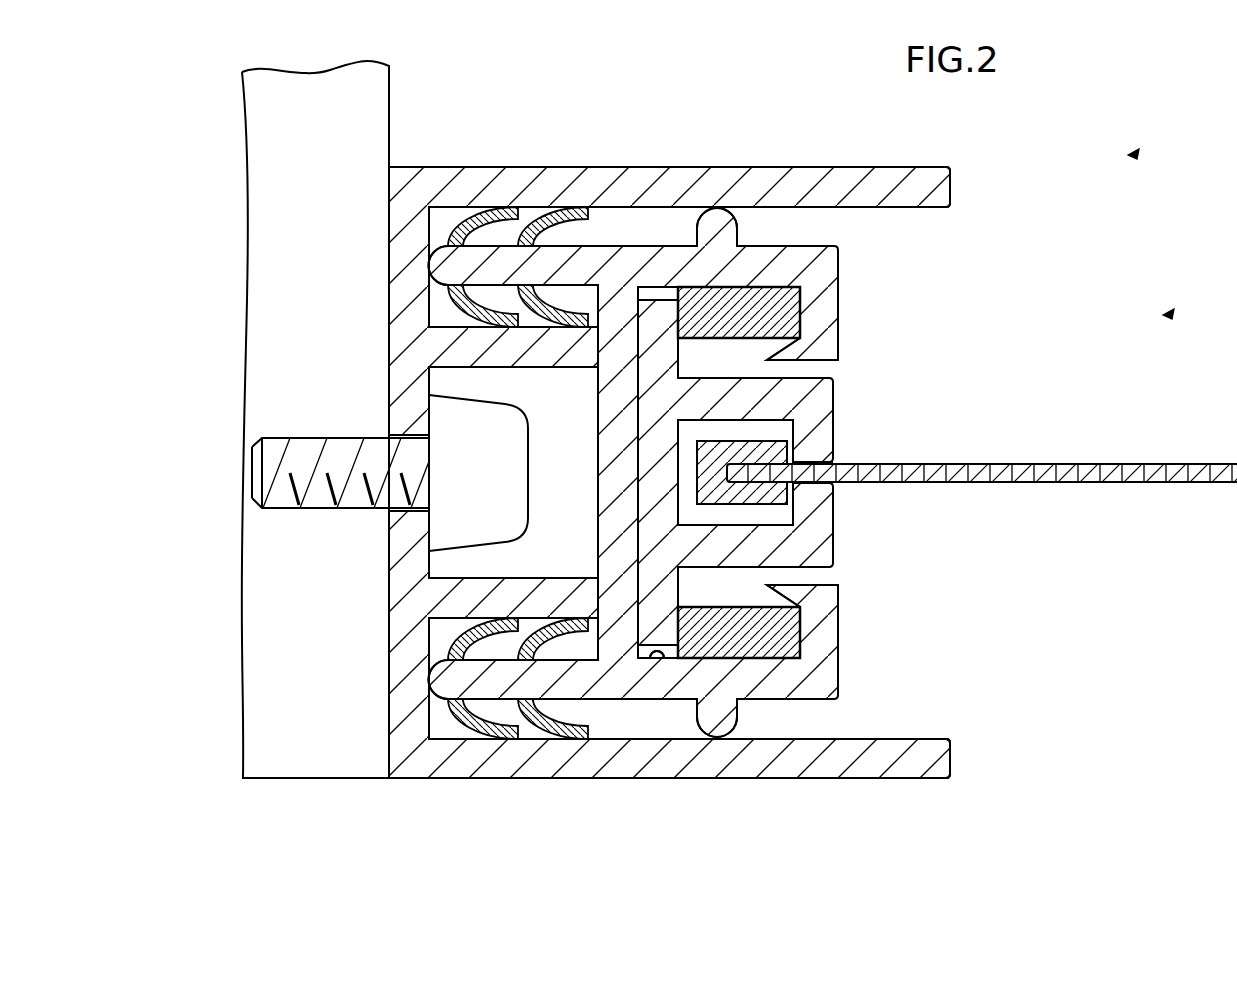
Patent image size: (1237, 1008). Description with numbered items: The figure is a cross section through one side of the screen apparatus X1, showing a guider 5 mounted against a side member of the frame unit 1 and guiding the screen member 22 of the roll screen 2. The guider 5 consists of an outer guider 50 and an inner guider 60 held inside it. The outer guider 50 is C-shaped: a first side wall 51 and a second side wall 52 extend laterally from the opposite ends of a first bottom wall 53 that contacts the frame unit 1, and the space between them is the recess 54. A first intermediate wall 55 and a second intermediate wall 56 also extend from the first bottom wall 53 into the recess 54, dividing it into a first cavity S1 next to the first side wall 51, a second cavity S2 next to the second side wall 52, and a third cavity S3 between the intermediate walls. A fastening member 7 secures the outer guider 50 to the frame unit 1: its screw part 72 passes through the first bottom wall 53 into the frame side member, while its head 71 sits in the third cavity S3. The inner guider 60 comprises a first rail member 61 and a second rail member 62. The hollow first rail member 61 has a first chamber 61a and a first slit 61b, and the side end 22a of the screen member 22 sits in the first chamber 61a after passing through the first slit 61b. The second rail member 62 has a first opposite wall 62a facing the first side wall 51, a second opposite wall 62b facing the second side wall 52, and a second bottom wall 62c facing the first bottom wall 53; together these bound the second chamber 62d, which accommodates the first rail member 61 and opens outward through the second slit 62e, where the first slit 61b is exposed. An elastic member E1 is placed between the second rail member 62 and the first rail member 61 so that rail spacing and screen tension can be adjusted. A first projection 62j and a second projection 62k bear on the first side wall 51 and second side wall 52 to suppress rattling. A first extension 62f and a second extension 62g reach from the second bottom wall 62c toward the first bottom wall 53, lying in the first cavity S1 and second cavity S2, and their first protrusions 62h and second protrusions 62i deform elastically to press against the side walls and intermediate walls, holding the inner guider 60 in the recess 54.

The frame unit 1 is at (305, 730).
The roll screen 2 is at (1163, 315).
The guider 5 is at (1045, 120).
The fastening member 7 is at (341, 453).
The screen member 22 is at (1170, 464).
The side end 22a is at (740, 450).
The outer guider 50 is at (923, 158).
The first side wall 51 is at (848, 178).
The second side wall 52 is at (833, 760).
The first bottom wall 53 is at (405, 627).
The recess 54 is at (785, 722).
The first intermediate wall 55 is at (478, 345).
The second intermediate wall 56 is at (508, 597).
The inner guider 60 is at (898, 243).
The first rail member 61 is at (843, 382).
The first chamber 61a is at (733, 517).
The first slit 61b is at (838, 463).
The second rail member 62 is at (852, 662).
The first opposite wall 62a is at (670, 255).
The second opposite wall 62b is at (700, 705).
The second bottom wall 62c is at (612, 507).
The second chamber 62d is at (665, 660).
The second slit 62e is at (837, 362).
The first extension 62f is at (572, 258).
The second extension 62g is at (555, 683).
The first protrusions 62h is at (540, 207).
The second protrusions 62i is at (483, 735).
The first projection 62j is at (740, 208).
The second projection 62k is at (748, 722).
The head 71 is at (465, 435).
The screw part 72 is at (290, 448).
The elastic member E1 is at (800, 290).
The first cavity S1 is at (442, 213).
The second cavity S2 is at (533, 730).
The third cavity S3 is at (443, 705).
The screen apparatus X1 is at (1128, 155).